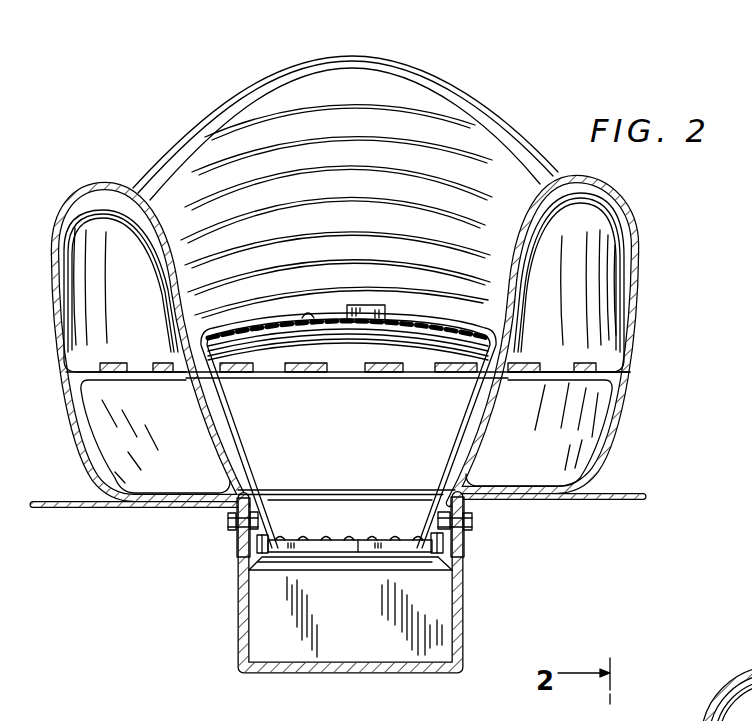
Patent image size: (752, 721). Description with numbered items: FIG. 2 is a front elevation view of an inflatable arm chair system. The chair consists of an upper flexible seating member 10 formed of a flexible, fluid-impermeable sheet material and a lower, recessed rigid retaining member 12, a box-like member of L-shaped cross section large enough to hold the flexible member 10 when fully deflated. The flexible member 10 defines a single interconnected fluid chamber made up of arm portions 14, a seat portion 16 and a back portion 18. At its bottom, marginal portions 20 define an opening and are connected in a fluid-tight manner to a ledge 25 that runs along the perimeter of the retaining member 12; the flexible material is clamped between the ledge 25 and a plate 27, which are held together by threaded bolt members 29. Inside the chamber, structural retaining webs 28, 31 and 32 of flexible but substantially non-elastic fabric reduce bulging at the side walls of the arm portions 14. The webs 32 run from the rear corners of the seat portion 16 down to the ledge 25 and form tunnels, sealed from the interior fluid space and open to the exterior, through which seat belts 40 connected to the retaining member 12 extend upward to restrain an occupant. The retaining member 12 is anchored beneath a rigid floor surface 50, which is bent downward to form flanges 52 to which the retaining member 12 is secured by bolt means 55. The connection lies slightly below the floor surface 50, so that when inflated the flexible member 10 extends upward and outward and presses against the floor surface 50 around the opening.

The upper flexible seating member 10 is at (386, 267).
The recessed rigid retaining member 12 is at (345, 579).
The arm portions 14 is at (362, 326).
The seat portion 16 is at (274, 330).
The back portion 18 is at (363, 60).
The marginal portions 20 is at (287, 572).
The ledge 25 is at (358, 541).
The plate 27 is at (433, 553).
The interior structural retaining web 28 is at (388, 368).
The threaded bolt members 29 is at (257, 538).
The interior structural retaining web 31 is at (563, 362).
The retaining webs forming tunnels 32 is at (212, 458).
The seat belts 40 is at (281, 279).
The rigid floor surface 50 is at (616, 492).
The flanges 52 is at (465, 541).
The bolt means 55 is at (471, 519).